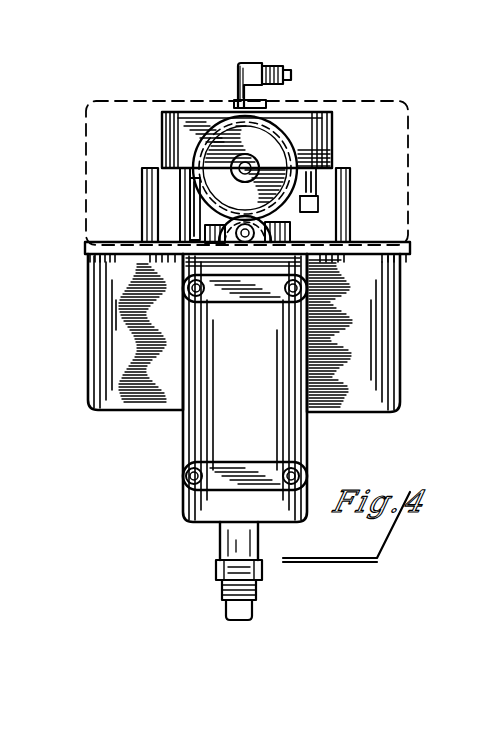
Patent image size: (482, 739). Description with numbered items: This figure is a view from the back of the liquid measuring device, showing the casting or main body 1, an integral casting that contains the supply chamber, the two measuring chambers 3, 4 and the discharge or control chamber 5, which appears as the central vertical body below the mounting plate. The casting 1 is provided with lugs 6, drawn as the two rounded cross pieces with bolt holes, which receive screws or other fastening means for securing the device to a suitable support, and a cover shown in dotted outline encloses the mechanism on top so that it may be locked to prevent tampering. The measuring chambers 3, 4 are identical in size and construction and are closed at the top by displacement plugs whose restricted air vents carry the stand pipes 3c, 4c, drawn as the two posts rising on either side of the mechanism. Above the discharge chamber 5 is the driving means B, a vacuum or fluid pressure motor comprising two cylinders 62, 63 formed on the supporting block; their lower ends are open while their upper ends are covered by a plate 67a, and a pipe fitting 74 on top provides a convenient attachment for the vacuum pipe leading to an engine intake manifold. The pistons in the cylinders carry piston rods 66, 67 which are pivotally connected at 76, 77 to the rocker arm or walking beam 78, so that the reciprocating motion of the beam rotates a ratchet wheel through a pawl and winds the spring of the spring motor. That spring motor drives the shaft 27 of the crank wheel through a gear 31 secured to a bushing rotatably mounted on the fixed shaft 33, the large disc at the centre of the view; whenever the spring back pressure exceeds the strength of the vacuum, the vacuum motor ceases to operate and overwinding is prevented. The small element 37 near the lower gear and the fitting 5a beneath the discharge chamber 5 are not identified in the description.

The casting or main body 1 is at (392, 250).
The measuring chamber 3 is at (380, 335).
The stand pipe 3c is at (343, 205).
The measuring chamber 4 is at (112, 333).
The stand pipe 4c is at (150, 210).
The discharge or control chamber 5 is at (288, 438).
The outlet fitting 5a is at (250, 580).
The lugs 6 is at (225, 298).
The shaft 27 is at (215, 250).
The gear 31 is at (272, 140).
The shaft 33 is at (252, 164).
The gear 37 is at (277, 233).
The cylinder 62 is at (330, 150).
The cylinder 63 is at (162, 133).
The piston rod 66 is at (314, 178).
The piston rod 67 is at (187, 186).
The plate 67a is at (192, 118).
The pipe fitting 74 is at (266, 68).
The pivotal connection 76 is at (318, 194).
The pivotal connection 77 is at (212, 218).
The rocker arm or walking beam 78 is at (222, 232).
The driving means B is at (293, 120).